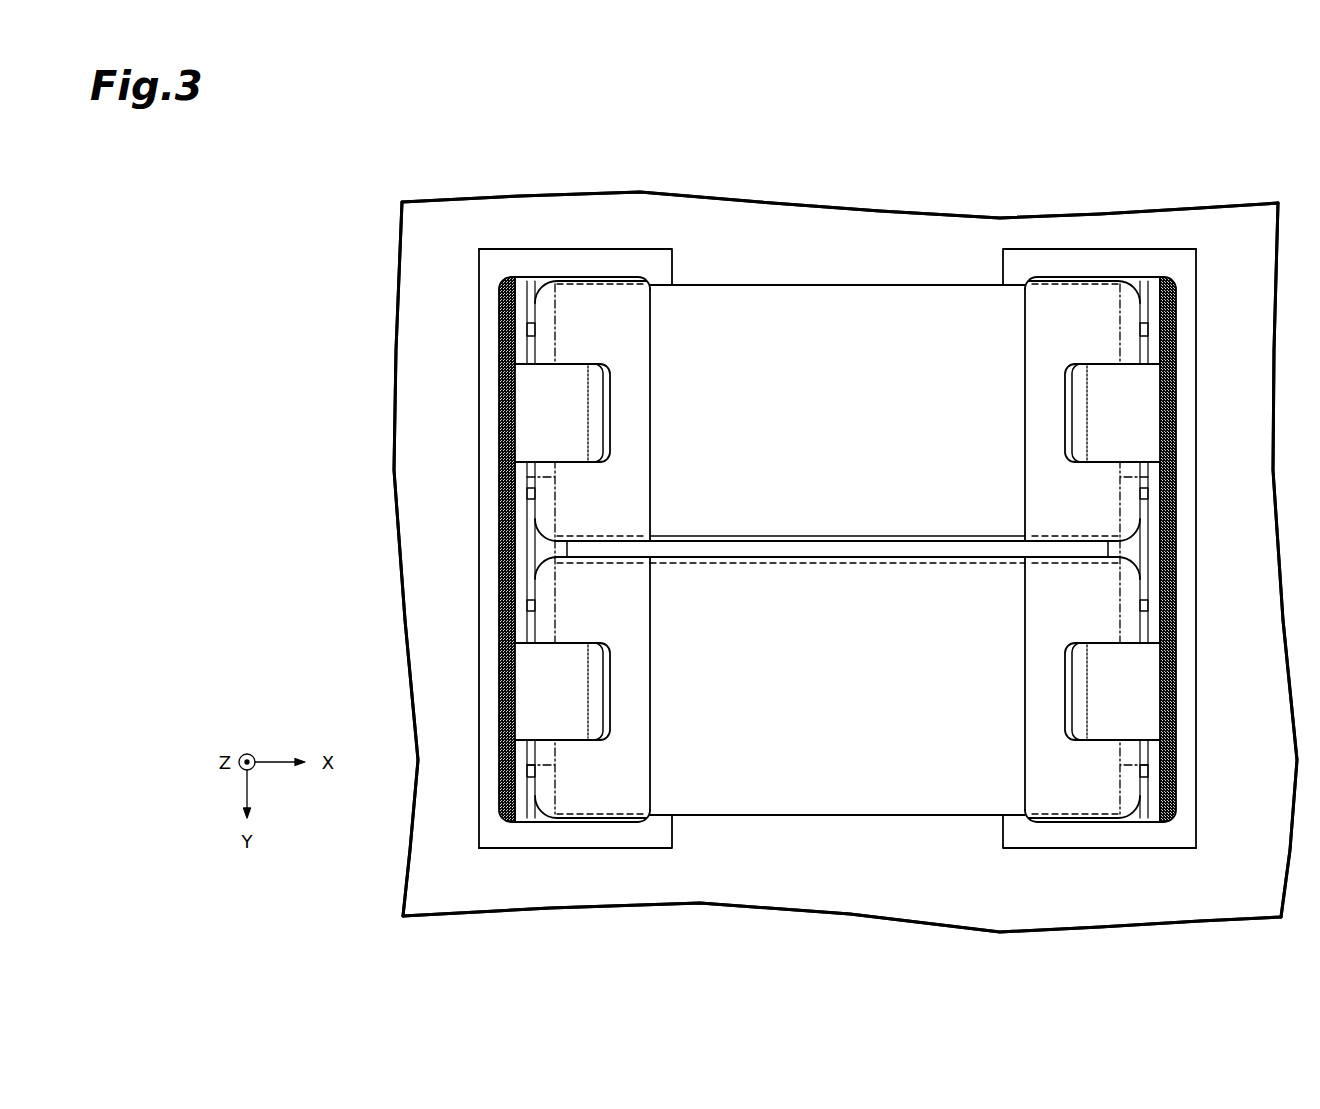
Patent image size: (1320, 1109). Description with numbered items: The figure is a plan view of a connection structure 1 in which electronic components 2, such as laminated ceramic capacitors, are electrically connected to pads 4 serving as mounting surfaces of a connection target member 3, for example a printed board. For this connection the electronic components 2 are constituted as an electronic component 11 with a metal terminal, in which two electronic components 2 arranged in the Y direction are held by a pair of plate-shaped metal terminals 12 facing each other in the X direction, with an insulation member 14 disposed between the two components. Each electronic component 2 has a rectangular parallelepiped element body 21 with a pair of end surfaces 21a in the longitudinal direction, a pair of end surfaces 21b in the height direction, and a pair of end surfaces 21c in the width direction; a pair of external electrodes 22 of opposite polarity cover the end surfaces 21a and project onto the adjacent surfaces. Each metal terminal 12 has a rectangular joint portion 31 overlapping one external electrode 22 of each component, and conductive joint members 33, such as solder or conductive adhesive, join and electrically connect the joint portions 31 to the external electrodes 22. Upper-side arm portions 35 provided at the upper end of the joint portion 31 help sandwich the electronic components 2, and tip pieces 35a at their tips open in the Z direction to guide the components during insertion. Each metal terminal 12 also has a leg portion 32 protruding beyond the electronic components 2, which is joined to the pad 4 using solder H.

The connection structure 1 is at (392, 200).
The electronic component 2 is at (666, 226).
The connection target member 3 is at (855, 905).
The pad 4 is at (490, 292).
The electronic component with a metal terminal 11 is at (1200, 243).
The metal terminal 12 is at (470, 510).
The insulation member 14 is at (807, 545).
The element body 21 is at (959, 280).
The end surface 21a is at (520, 478).
The end surface 21b is at (907, 305).
The end surface 21c is at (805, 285).
The external electrode 22 is at (578, 300).
The joint portion 31 is at (510, 562).
The leg portion 32 is at (538, 266).
The joint member 33 is at (530, 347).
The arm portion 35 is at (540, 398).
The tip piece 35a is at (597, 375).
The solder H is at (505, 535).